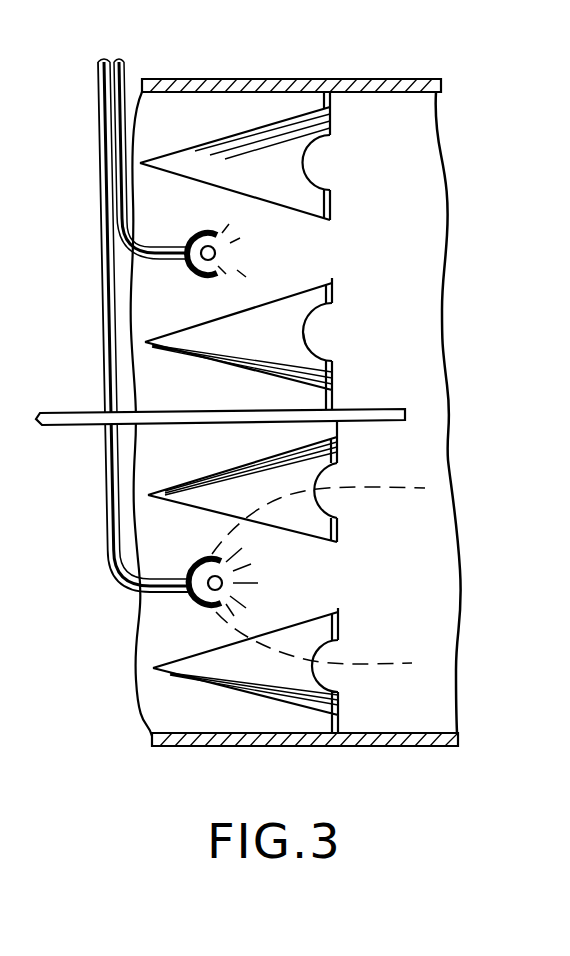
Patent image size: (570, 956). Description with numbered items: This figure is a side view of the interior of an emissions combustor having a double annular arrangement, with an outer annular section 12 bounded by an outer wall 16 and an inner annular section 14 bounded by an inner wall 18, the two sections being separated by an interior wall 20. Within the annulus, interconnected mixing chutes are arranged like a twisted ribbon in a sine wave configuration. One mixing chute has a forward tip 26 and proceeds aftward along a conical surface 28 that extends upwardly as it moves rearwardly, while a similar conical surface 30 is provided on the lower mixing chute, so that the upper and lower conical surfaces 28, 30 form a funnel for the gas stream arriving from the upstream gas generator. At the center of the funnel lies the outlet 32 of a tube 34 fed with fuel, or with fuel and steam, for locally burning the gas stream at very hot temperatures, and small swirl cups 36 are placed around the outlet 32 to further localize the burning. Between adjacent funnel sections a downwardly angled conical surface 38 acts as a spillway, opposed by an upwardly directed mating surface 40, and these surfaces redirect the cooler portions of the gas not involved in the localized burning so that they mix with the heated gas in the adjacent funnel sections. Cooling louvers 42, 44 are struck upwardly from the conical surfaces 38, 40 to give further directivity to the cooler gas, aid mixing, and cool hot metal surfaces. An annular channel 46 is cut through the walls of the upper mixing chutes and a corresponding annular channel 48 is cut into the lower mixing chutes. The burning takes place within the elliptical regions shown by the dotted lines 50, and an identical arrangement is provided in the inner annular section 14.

The outer annular section 12 is at (394, 272).
The inner annular section 14 is at (407, 575).
The outer wall 16 is at (405, 79).
The inner wall 18 is at (410, 746).
The interior wall 20 is at (389, 394).
The forward tip 26 is at (264, 172).
The conical surface 28 is at (262, 124).
The conical surface 30 is at (261, 325).
The outlet 32 is at (215, 258).
The tube 34 is at (160, 242).
The swirl cups 36 is at (212, 214).
The downwardly angled conical surface 38 is at (256, 205).
The upwardly directed mating surface 40 is at (303, 288).
The cooling louver 42 is at (313, 206).
The cooling louver 44 is at (322, 305).
The annular channel 46 is at (316, 146).
The annular channel 48 is at (310, 352).
The dotted lines 50 is at (364, 488).